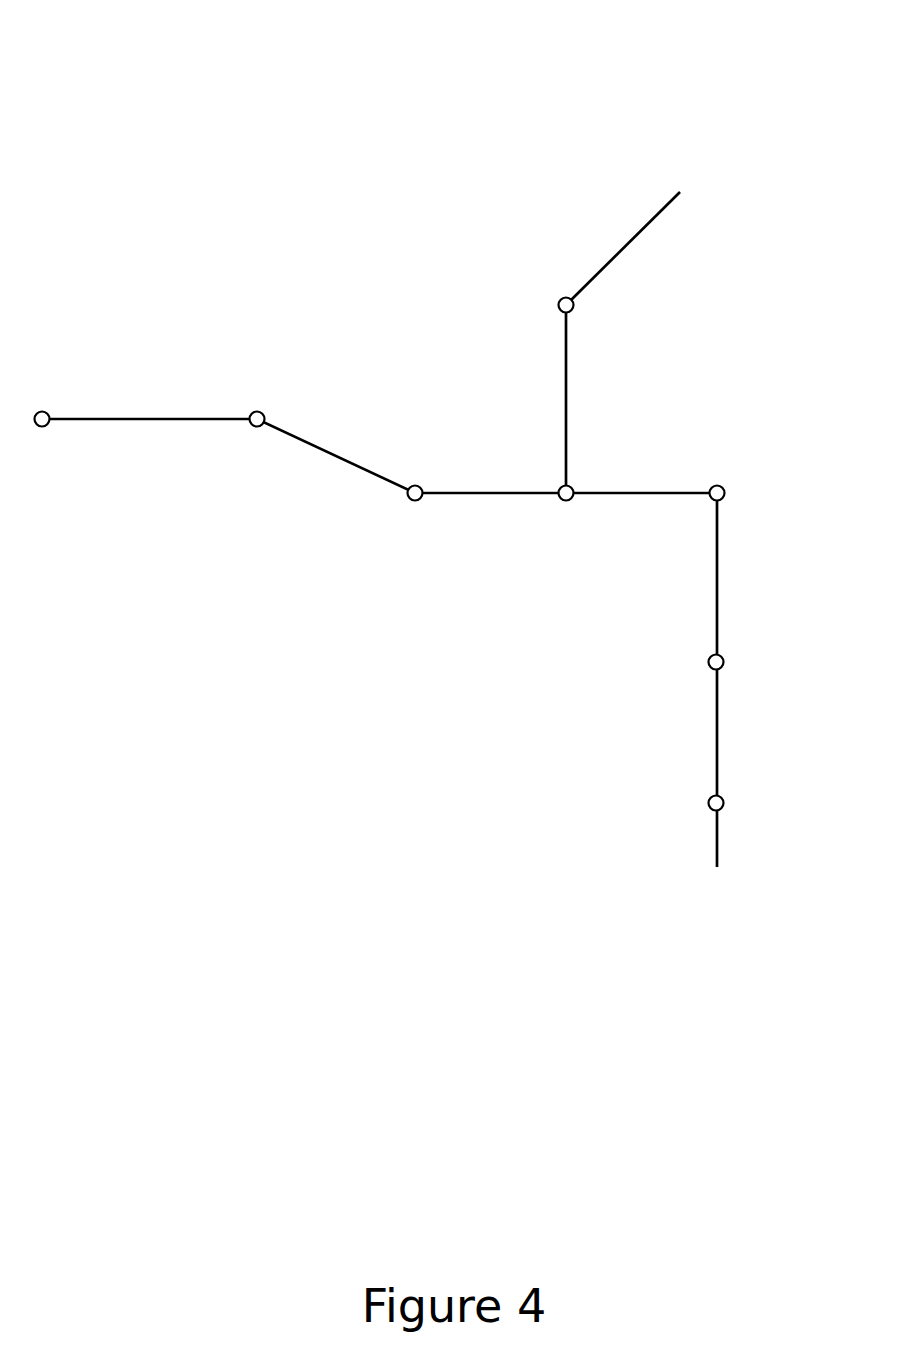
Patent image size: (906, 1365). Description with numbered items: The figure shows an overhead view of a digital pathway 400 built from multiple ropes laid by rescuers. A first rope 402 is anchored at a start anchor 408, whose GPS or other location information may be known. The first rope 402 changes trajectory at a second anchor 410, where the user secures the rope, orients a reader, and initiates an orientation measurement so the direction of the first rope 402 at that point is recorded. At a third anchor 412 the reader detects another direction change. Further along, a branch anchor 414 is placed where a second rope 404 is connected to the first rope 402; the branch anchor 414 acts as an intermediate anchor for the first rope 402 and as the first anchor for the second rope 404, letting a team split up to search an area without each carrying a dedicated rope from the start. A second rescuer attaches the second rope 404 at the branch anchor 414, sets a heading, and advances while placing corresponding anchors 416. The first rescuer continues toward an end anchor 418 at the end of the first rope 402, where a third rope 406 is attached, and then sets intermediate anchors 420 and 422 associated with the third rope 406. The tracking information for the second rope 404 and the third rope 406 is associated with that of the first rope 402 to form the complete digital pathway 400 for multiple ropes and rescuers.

The digital pathway 400 is at (174, 54).
The first rope 402 is at (133, 431).
The second rope 404 is at (577, 359).
The third rope 406 is at (706, 736).
The start anchor 408 is at (41, 410).
The second anchor 410 is at (257, 410).
The third anchor 412 is at (416, 485).
The branch anchor 414 is at (567, 502).
The anchors 416 is at (566, 297).
The end anchor 418 is at (717, 485).
The intermediate anchor 420 is at (722, 655).
The intermediate anchor 422 is at (722, 797).